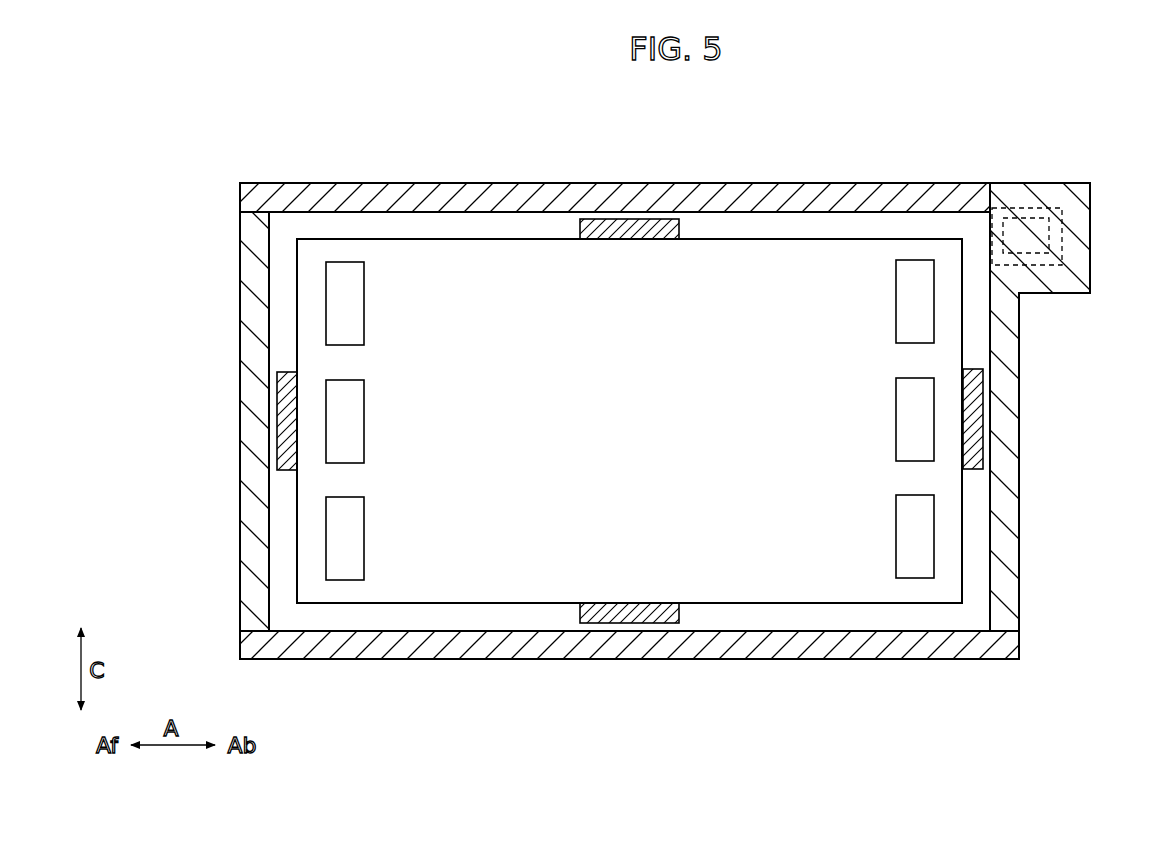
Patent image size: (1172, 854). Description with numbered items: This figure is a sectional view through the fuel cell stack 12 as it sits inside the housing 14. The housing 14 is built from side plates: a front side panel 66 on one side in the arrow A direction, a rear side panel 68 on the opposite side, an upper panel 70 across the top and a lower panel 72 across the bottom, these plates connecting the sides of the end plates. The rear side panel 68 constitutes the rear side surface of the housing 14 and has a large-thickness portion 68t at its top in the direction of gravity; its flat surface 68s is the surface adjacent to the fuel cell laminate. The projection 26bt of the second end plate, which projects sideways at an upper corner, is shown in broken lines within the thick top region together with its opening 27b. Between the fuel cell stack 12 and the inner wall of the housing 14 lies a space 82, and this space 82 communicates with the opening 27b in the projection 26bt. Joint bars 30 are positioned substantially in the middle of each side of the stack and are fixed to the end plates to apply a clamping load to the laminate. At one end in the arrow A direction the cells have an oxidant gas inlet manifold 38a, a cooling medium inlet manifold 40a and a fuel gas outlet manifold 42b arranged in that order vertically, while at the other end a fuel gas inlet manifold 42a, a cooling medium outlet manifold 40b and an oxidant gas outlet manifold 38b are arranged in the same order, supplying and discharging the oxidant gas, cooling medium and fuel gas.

The housing 14 is at (450, 172).
The upper panel 70 is at (722, 196).
The lower panel 72 is at (792, 653).
The front side panel 66 is at (247, 295).
The rear side panel 68 is at (1022, 569).
The flat surface 68s is at (986, 272).
The large-thickness portion 68t is at (1050, 292).
The projection 26bt is at (1048, 222).
The opening 27b is at (1037, 232).
The space 82 is at (904, 226).
The fuel cell stack 12 is at (835, 236).
The joint bar 30 is at (635, 238).
The oxidant gas inlet manifold 38a is at (355, 297).
The cooling medium inlet manifold 40a is at (355, 415).
The fuel gas outlet manifold 42b is at (355, 541).
The fuel gas inlet manifold 42a is at (908, 296).
The cooling medium outlet manifold 40b is at (908, 414).
The oxidant gas outlet manifold 38b is at (905, 538).